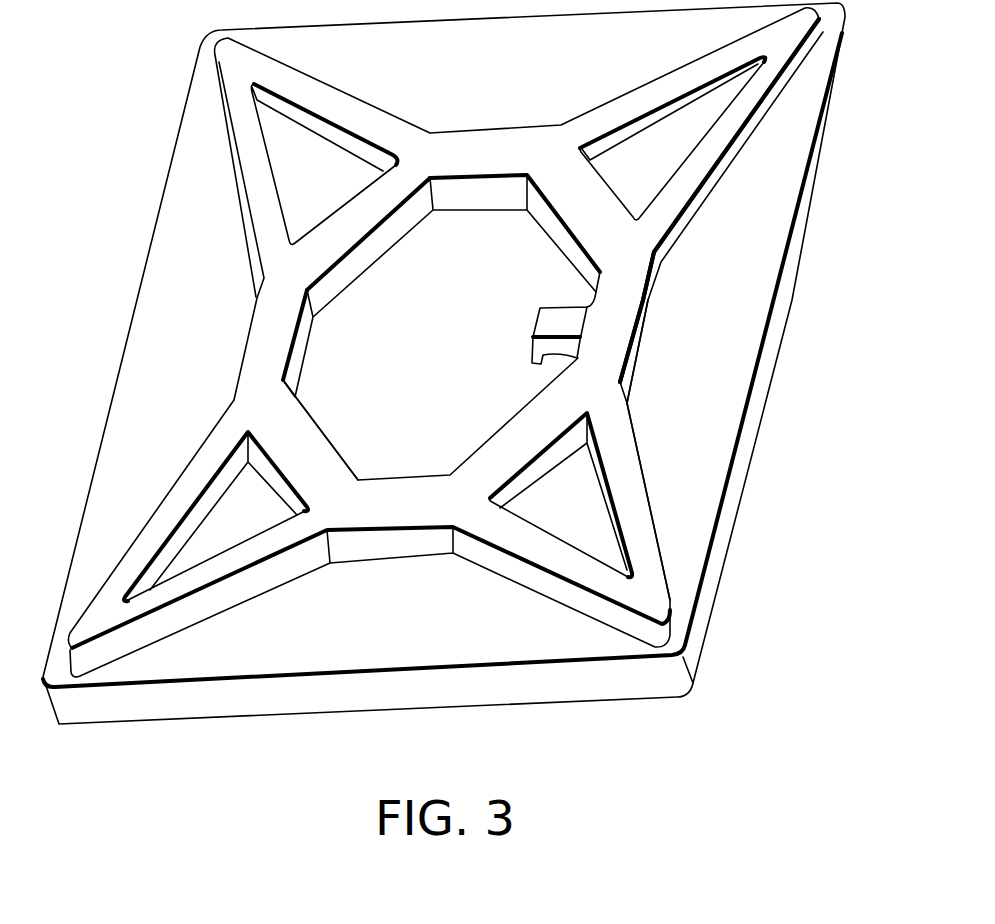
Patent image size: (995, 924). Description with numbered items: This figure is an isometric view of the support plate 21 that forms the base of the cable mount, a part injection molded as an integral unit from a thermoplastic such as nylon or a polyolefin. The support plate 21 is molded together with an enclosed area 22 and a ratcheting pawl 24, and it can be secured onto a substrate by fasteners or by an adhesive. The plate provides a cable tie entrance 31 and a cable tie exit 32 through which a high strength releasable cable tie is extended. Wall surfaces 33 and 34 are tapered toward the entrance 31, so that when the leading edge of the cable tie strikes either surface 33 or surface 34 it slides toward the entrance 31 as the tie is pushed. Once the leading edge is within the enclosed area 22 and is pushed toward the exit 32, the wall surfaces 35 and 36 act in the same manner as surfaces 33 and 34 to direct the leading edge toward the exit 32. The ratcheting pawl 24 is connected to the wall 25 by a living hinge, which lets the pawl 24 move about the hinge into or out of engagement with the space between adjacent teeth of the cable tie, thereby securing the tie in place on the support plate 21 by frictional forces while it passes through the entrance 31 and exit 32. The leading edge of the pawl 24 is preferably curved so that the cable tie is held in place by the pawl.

The support plate 21 is at (747, 332).
The enclosed area 22 is at (463, 353).
The ratcheting pawl 24 is at (553, 322).
The wall 25 is at (625, 308).
The cable tie entrance 31 is at (636, 351).
The cable tie exit 32 is at (302, 345).
The wall surface 33 is at (683, 230).
The wall surface 34 is at (638, 452).
The wall surface 35 is at (363, 258).
The wall surface 36 is at (323, 433).